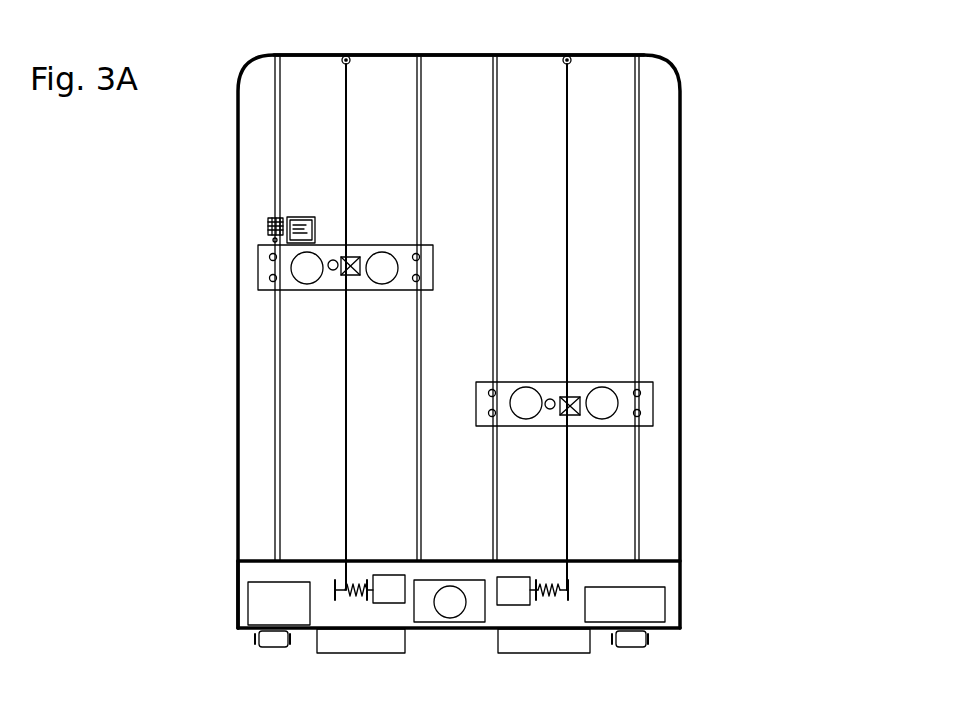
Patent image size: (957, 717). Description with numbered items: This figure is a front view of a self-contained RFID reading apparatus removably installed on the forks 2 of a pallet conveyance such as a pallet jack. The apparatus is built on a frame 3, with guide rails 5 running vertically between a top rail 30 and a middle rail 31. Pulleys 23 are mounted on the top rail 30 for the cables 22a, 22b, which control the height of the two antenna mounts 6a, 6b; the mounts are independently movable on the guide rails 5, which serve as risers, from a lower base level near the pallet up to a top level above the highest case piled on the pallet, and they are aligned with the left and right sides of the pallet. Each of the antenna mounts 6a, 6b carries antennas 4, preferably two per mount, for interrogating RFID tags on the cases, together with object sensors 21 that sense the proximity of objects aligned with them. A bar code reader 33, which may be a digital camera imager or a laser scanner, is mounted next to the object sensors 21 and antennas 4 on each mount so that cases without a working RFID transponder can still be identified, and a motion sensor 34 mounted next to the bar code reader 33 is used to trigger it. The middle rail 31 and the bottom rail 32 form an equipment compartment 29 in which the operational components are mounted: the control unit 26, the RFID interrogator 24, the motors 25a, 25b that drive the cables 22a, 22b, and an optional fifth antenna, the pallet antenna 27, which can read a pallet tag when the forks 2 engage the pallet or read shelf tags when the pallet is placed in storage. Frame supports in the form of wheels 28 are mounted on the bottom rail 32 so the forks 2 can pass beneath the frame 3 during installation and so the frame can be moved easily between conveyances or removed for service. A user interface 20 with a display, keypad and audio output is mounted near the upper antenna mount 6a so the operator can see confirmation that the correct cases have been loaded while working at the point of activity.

The forks 2 is at (373, 655).
The frame 3 is at (681, 238).
The antennas 4 is at (378, 278).
The guide rails 5 is at (274, 146).
The antenna mount 6a is at (432, 246).
The antenna mount 6b is at (481, 379).
The user interface 20 is at (267, 228).
The object sensors 21 is at (269, 258).
The cable 22a is at (347, 386).
The cable 22b is at (565, 463).
The pulleys 23 is at (345, 54).
The RFID interrogator 24 is at (278, 610).
The motor 25a is at (388, 580).
The motor 25b is at (518, 585).
The control unit 26 is at (653, 605).
The pallet antenna 27 is at (450, 607).
The wheels 28 is at (273, 640).
The equipment compartment 29 is at (257, 571).
The top rail 30 is at (478, 53).
The middle rail 31 is at (657, 561).
The bottom rail 32 is at (475, 630).
The bar code reader 33 is at (352, 256).
The motion sensor 34 is at (333, 259).